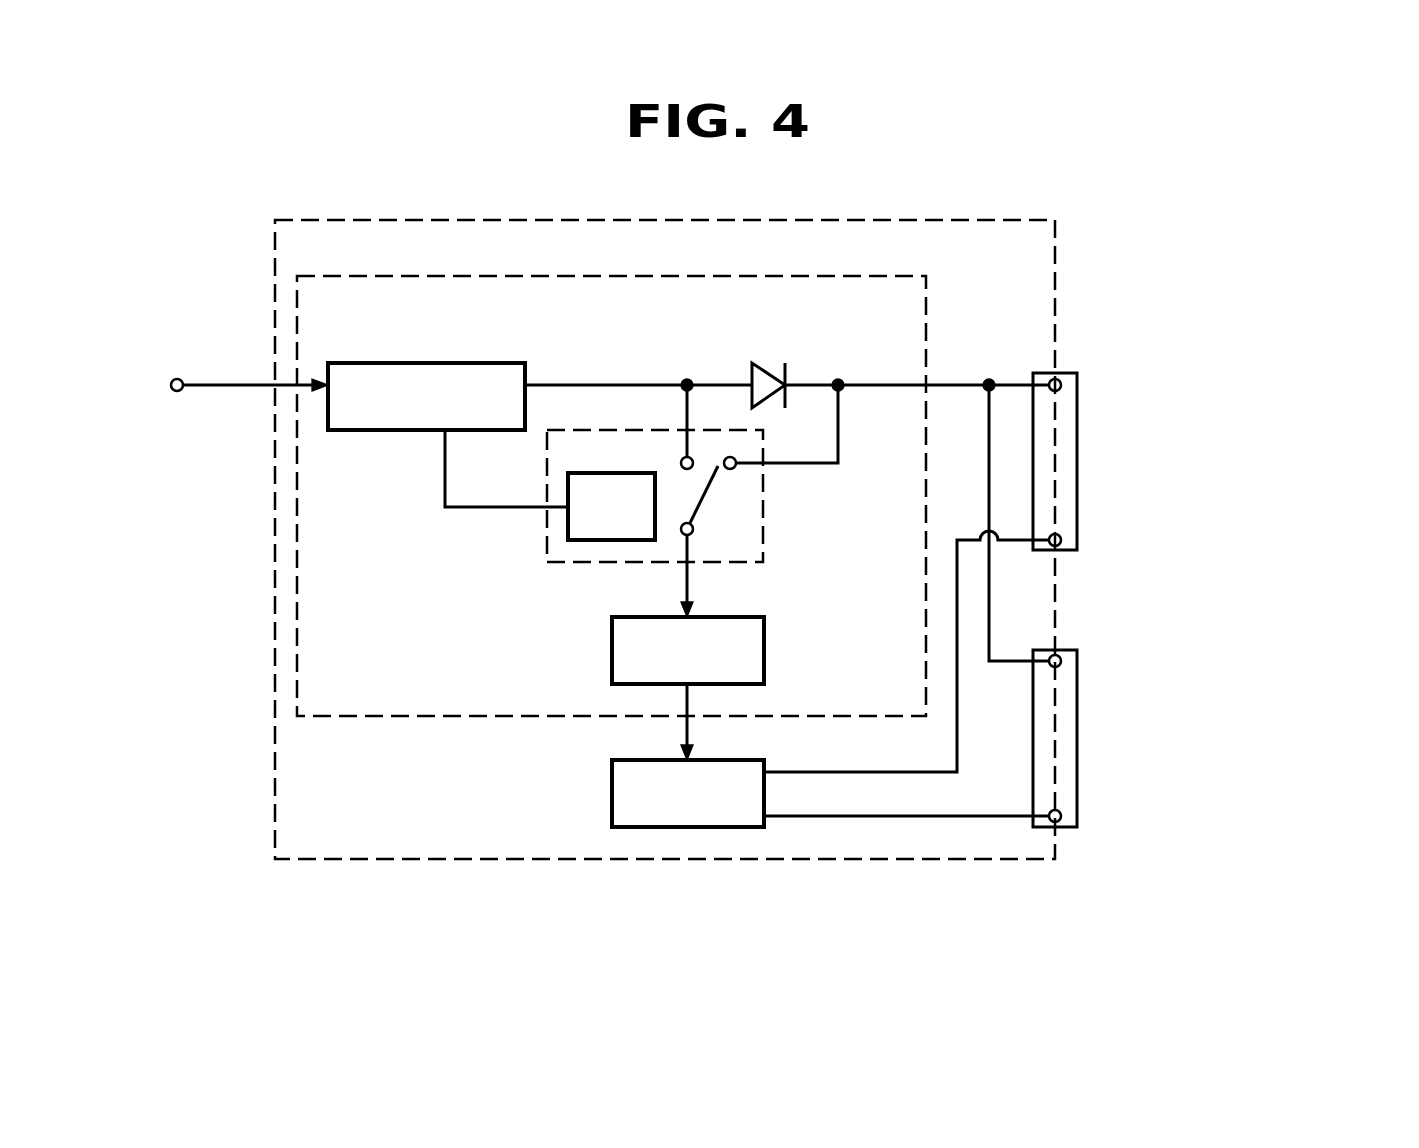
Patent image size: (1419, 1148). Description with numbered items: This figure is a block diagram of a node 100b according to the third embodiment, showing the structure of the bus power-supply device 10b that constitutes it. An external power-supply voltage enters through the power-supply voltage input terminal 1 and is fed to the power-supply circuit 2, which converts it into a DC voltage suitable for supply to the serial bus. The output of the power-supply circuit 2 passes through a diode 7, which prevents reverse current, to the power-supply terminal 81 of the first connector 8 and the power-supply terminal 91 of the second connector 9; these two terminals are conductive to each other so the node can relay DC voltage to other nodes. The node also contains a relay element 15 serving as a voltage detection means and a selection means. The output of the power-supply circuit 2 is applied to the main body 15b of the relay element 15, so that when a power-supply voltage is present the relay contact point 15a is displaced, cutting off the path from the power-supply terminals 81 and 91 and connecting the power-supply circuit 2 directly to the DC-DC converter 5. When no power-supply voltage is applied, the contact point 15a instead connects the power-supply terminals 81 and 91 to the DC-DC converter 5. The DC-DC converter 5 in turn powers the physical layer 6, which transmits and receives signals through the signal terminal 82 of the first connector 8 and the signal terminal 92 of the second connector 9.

The node 100b is at (362, 219).
The bus power-supply device 10b is at (622, 276).
The power-supply voltage input terminal 1 is at (172, 392).
The power-supply circuit 2 is at (503, 363).
The diode 7 is at (754, 361).
The relay element 15 is at (588, 430).
The relay contact point 15a is at (712, 488).
The main body of the relay element 15b is at (600, 541).
The DC-DC converter 5 is at (732, 617).
The physical layer 6 is at (612, 777).
The first connector 8 is at (1078, 452).
The power-supply terminal 81 is at (1061, 379).
The signal terminal 82 is at (1061, 534).
The second connector 9 is at (1078, 727).
The power-supply terminal 91 is at (1061, 655).
The signal terminal 92 is at (1061, 810).